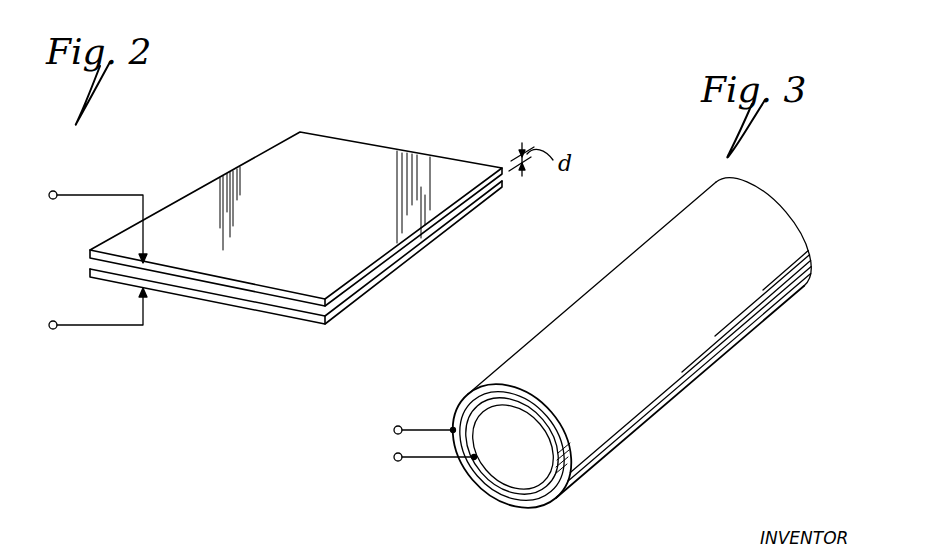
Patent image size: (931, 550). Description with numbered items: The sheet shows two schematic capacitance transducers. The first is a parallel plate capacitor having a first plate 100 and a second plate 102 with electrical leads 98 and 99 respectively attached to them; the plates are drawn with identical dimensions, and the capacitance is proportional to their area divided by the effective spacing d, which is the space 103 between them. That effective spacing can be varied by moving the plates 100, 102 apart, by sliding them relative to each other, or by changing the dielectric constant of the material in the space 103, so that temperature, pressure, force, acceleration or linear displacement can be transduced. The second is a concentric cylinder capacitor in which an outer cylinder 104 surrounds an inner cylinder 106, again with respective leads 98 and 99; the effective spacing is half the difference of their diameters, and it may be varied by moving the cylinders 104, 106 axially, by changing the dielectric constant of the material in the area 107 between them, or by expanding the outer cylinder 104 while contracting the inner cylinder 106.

In FIG. 2, the electrical lead 98 is at (49, 196).
In FIG. 3, the electrical lead 98 is at (396, 431).
In FIG. 2, the electrical lead 99 is at (50, 328).
In FIG. 3, the electrical lead 99 is at (395, 460).
In FIG. 2, the first plate 100 is at (296, 219).
In FIG. 2, the second plate 102 is at (333, 309).
In FIG. 2, the space 103 is at (259, 232).
In FIG. 3, the outer cylinder 104 is at (802, 237).
In FIG. 3, the inner cylinder 106 is at (475, 435).
In FIG. 3, the area between the cylinders 107 is at (534, 497).